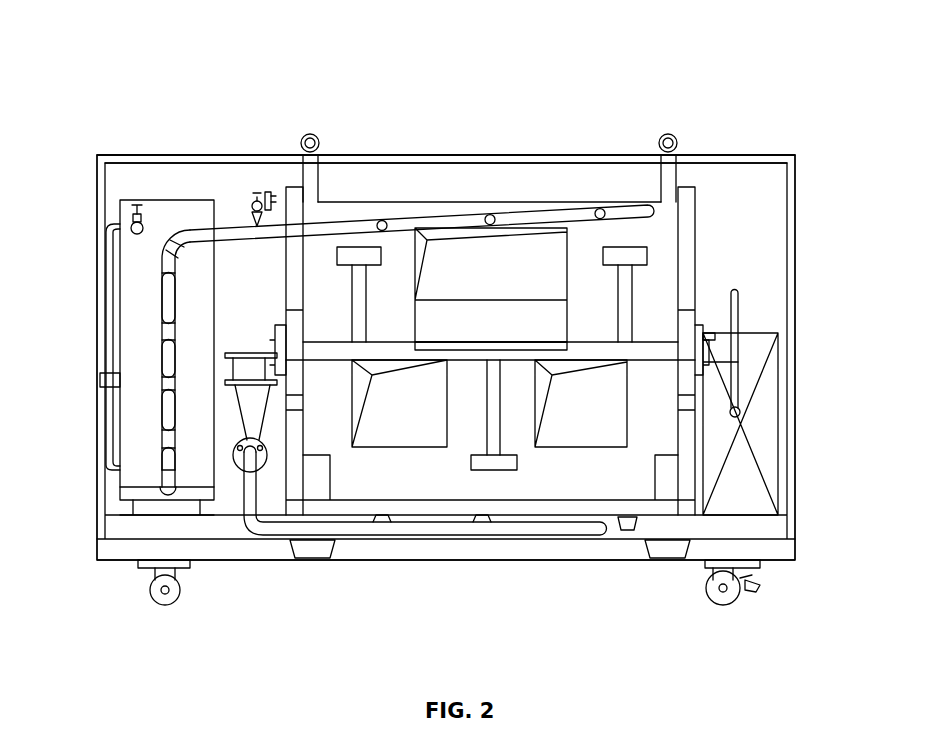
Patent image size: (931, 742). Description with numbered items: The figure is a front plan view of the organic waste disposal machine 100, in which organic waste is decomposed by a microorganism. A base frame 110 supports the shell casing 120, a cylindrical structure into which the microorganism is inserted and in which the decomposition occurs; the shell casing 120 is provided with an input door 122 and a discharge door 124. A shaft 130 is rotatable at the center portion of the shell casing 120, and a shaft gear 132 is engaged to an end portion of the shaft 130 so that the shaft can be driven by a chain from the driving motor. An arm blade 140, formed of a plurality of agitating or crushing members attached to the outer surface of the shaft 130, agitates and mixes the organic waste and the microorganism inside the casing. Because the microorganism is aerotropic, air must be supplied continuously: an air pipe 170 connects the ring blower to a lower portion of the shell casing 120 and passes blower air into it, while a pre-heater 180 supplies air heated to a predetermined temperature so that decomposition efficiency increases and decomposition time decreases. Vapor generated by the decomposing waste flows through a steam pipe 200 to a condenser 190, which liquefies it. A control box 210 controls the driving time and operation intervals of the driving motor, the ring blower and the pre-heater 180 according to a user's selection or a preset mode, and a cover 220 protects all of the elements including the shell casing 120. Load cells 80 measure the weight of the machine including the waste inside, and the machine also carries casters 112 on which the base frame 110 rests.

The organic waste disposal machine 100 is at (268, 78).
The base frame 110 is at (108, 548).
The casters 112 is at (717, 586).
The shell casing 120 is at (612, 235).
The input door 122 is at (437, 232).
The discharge door 124 is at (393, 448).
The shaft 130 is at (653, 350).
The shaft gear 132 is at (737, 320).
The arm blade 140 is at (497, 470).
The air pipe 170 is at (258, 535).
The pre-heater 180 is at (233, 455).
The condenser 190 is at (185, 212).
The steam pipe 200 is at (552, 206).
The control box 210 is at (757, 387).
The cover 220 is at (712, 153).
The load cell 80 is at (626, 532).